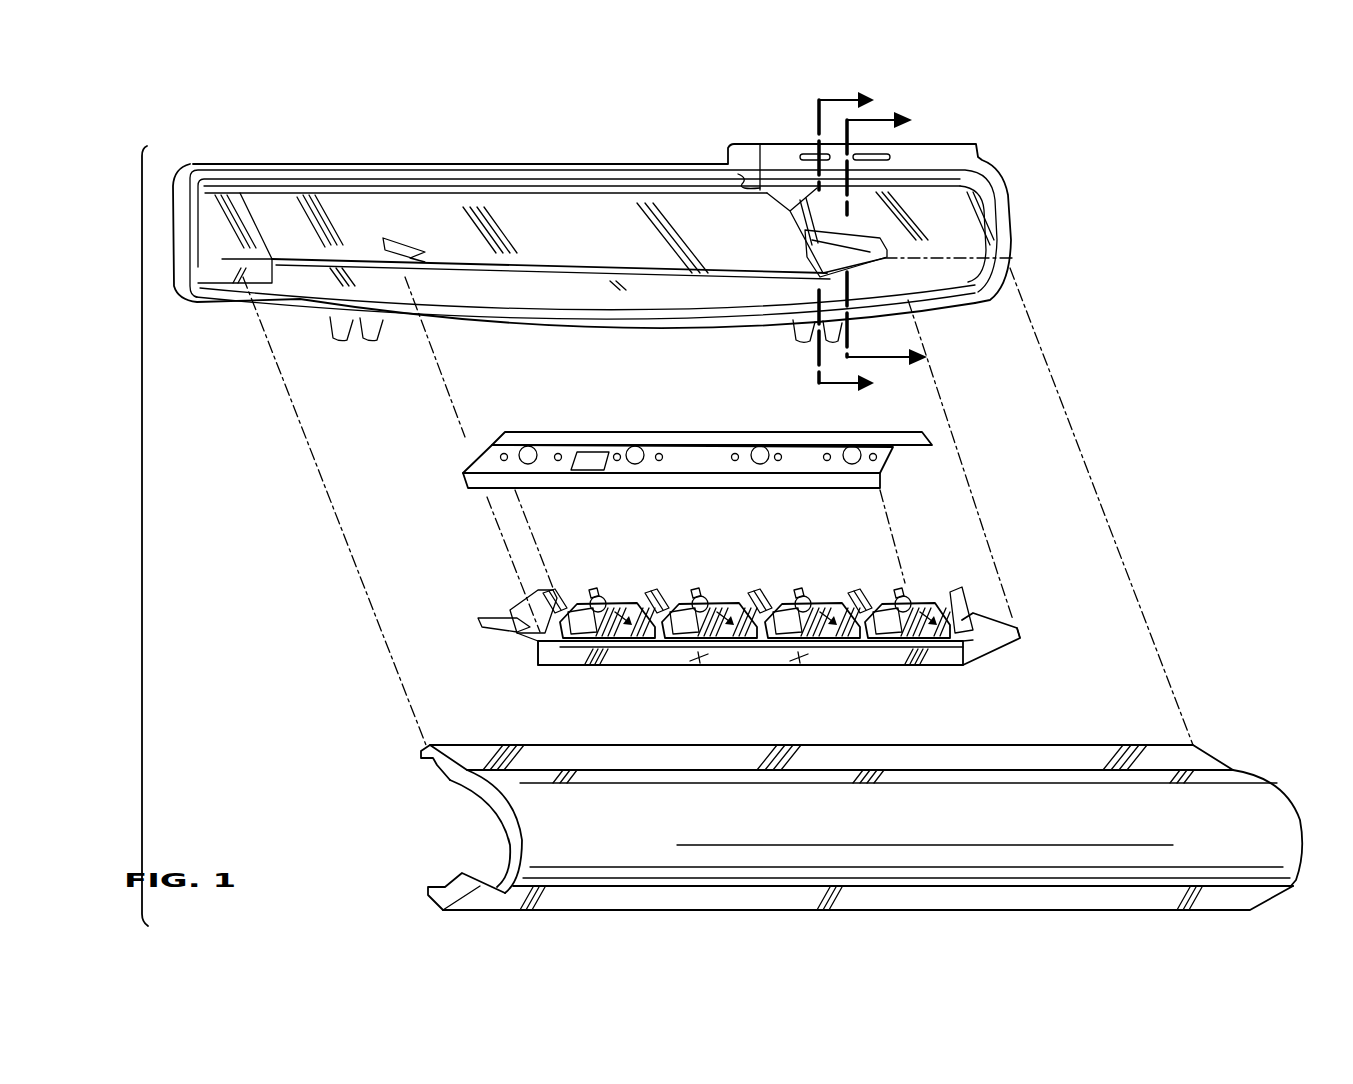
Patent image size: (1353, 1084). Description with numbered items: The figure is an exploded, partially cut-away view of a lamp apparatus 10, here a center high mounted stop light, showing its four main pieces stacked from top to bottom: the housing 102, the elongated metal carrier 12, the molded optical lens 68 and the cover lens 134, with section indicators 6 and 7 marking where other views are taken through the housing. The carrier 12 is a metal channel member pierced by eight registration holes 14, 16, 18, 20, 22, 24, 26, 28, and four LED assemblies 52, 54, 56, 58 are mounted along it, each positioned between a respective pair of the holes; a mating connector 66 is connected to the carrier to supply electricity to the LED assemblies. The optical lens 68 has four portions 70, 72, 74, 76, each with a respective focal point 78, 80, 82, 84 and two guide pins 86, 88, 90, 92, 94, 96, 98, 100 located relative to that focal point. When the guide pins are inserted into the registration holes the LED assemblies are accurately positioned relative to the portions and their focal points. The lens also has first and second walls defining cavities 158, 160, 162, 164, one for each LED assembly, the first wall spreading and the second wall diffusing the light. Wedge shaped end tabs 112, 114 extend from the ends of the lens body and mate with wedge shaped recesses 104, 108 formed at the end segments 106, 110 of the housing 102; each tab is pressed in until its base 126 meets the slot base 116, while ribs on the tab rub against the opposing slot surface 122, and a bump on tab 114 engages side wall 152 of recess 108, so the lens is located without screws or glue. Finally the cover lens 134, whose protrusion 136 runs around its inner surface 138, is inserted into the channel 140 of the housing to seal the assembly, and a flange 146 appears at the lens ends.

The section line 6- 6 is at (896, 238).
The section line 7- 7 is at (855, 241).
The lamp apparatus 10 is at (1167, 311).
The elongated metal carrier 12 is at (508, 400).
The registration hole 14 is at (877, 462).
The registration hole 16 is at (828, 462).
The registration hole 18 is at (778, 462).
The registration hole 20 is at (735, 462).
The registration hole 22 is at (658, 462).
The registration hole 24 is at (617, 462).
The registration hole 26 is at (558, 462).
The registration hole 28 is at (500, 459).
The LED assembly 52 is at (853, 448).
The LED assembly 54 is at (762, 448).
The LED assembly 56 is at (633, 448).
The LED assembly 58 is at (531, 448).
The mating connector 66 is at (590, 470).
The optical lens 68 is at (958, 692).
The portion of optical lens 70 is at (886, 664).
The portion of optical lens 72 is at (763, 664).
The portion of optical lens 74 is at (676, 643).
The portion of optical lens 76 is at (577, 625).
The focal point 78 is at (918, 666).
The focal point 80 is at (801, 668).
The focal point 82 is at (707, 666).
The focal point 84 is at (612, 661).
The guide pin 86 is at (909, 589).
The guide pin 88 is at (873, 589).
The guide pin 90 is at (800, 591).
The guide pin 92 is at (762, 592).
The guide pin 94 is at (697, 593).
The guide pin 96 is at (656, 592).
The guide pin 98 is at (589, 593).
The guide pin 100 is at (551, 583).
The housing 102 is at (356, 364).
The formed recess 104 is at (884, 228).
The end segment 106 is at (978, 240).
The formed recess 108 is at (398, 244).
The end segment 110 is at (280, 200).
The wedge shaped end tab 112 is at (1031, 618).
The wedge shaped end tab 114 is at (490, 641).
The base of slot 116 is at (805, 229).
The opposing surface 122 is at (410, 245).
The base of tab 126 is at (496, 612).
The cover lens 134 is at (1264, 918).
The protrusion 136 is at (440, 878).
The inner surface of cover lens 138 is at (443, 783).
The channel 140 is at (230, 300).
The flange 146 is at (537, 665).
The side wall of recess 152 is at (886, 240).
The cavity 158 is at (640, 606).
The cavity 160 is at (742, 610).
The cavity 162 is at (845, 603).
The cavity 164 is at (946, 604).